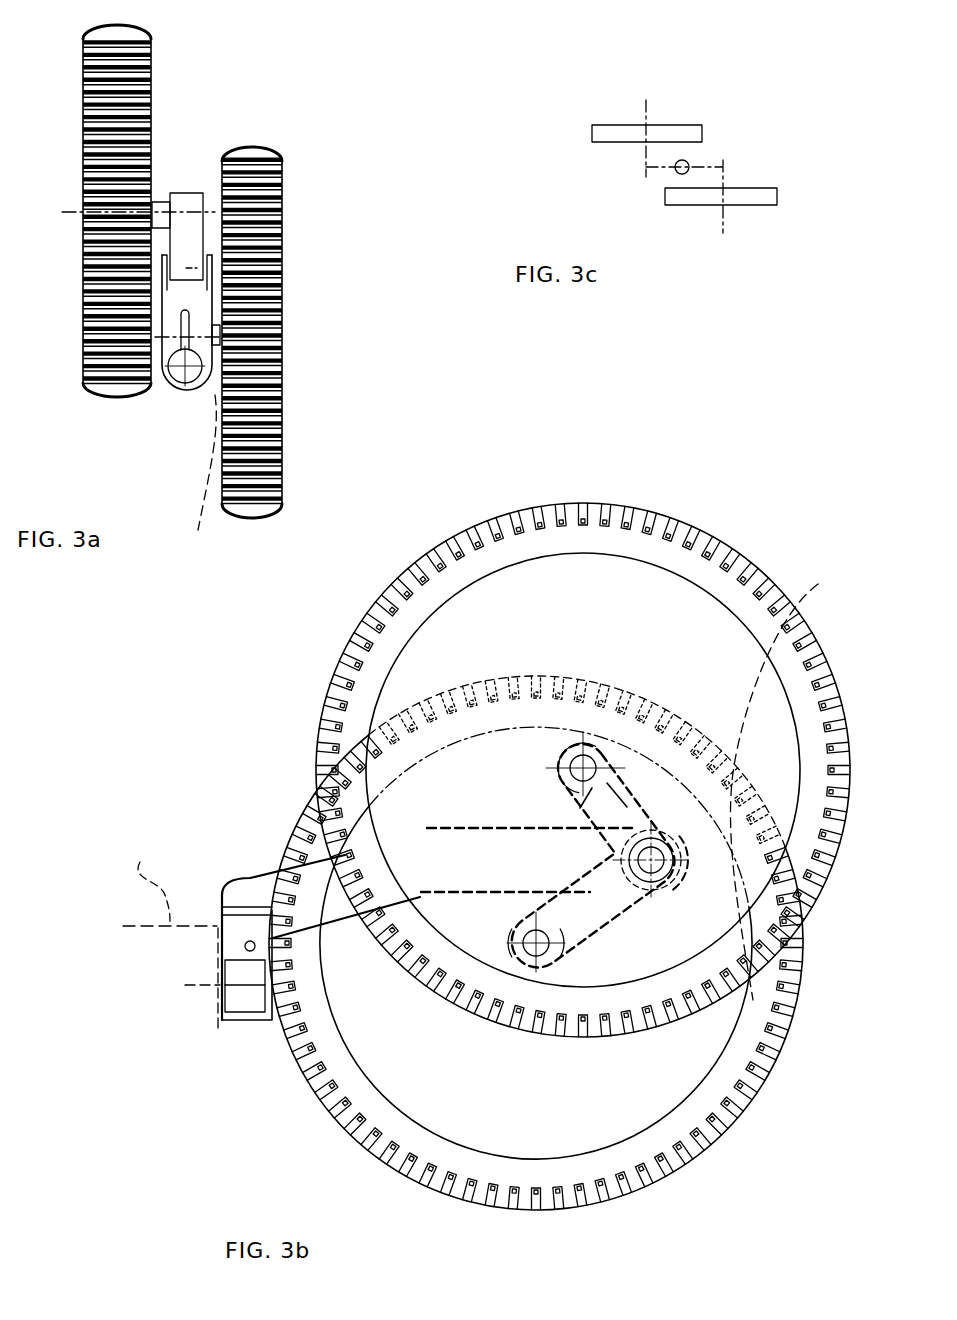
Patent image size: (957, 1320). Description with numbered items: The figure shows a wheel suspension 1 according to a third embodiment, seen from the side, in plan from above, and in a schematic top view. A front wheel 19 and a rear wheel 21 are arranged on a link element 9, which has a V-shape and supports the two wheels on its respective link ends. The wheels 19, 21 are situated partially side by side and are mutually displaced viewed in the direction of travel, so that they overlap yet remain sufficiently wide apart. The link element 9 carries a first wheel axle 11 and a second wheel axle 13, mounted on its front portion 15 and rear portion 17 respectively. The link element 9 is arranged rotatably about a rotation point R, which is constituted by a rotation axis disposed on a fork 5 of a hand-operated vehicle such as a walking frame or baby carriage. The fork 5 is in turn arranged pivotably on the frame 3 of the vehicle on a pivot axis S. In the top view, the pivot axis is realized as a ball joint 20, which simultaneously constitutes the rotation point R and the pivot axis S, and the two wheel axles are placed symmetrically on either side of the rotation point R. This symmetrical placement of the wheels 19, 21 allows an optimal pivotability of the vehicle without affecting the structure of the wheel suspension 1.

In FIG. 3A, the wheel suspension 1 is at (212, 137).
In FIG. 3C, the wheel suspension 1 is at (765, 128).
In FIG. 3B, the wheel suspension 1 is at (222, 739).
In FIG. 3A, the frame 3 is at (204, 474).
In FIG. 3B, the frame 3 is at (170, 883).
In FIG. 3A, the fork 5 is at (187, 390).
In FIG. 3B, the fork 5 is at (240, 880).
In FIG. 3A, the link element 9 is at (170, 193).
In FIG. 3B, the link element 9 is at (818, 584).
In FIG. 3A, the first wheel axle 11 is at (293, 337).
In FIG. 3B, the first wheel axle 11 is at (530, 931).
In FIG. 3A, the second wheel axle 13 is at (63, 212).
In FIG. 3B, the second wheel axle 13 is at (594, 766).
In FIG. 3B, the front portion 15 is at (585, 972).
In FIG. 3B, the rear portion 17 is at (630, 762).
In FIG. 3A, the front wheel 19 is at (285, 392).
In FIG. 3C, the front wheel 19 is at (592, 140).
In FIG. 3B, the front wheel 19 is at (298, 1072).
In FIG. 3C, the ball joint 20 is at (685, 175).
In FIG. 3A, the rear wheel 21 is at (117, 398).
In FIG. 3C, the rear wheel 21 is at (767, 205).
In FIG. 3B, the rear wheel 21 is at (617, 503).
In FIG. 3A, the rotation point R is at (185, 266).
In FIG. 3C, the rotation point R is at (663, 175).
In FIG. 3B, the rotation point R is at (689, 859).
In FIG. 3A, the pivot axis S is at (172, 388).
In FIG. 3C, the pivot axis S is at (697, 158).
In FIG. 3B, the pivot axis S is at (202, 988).